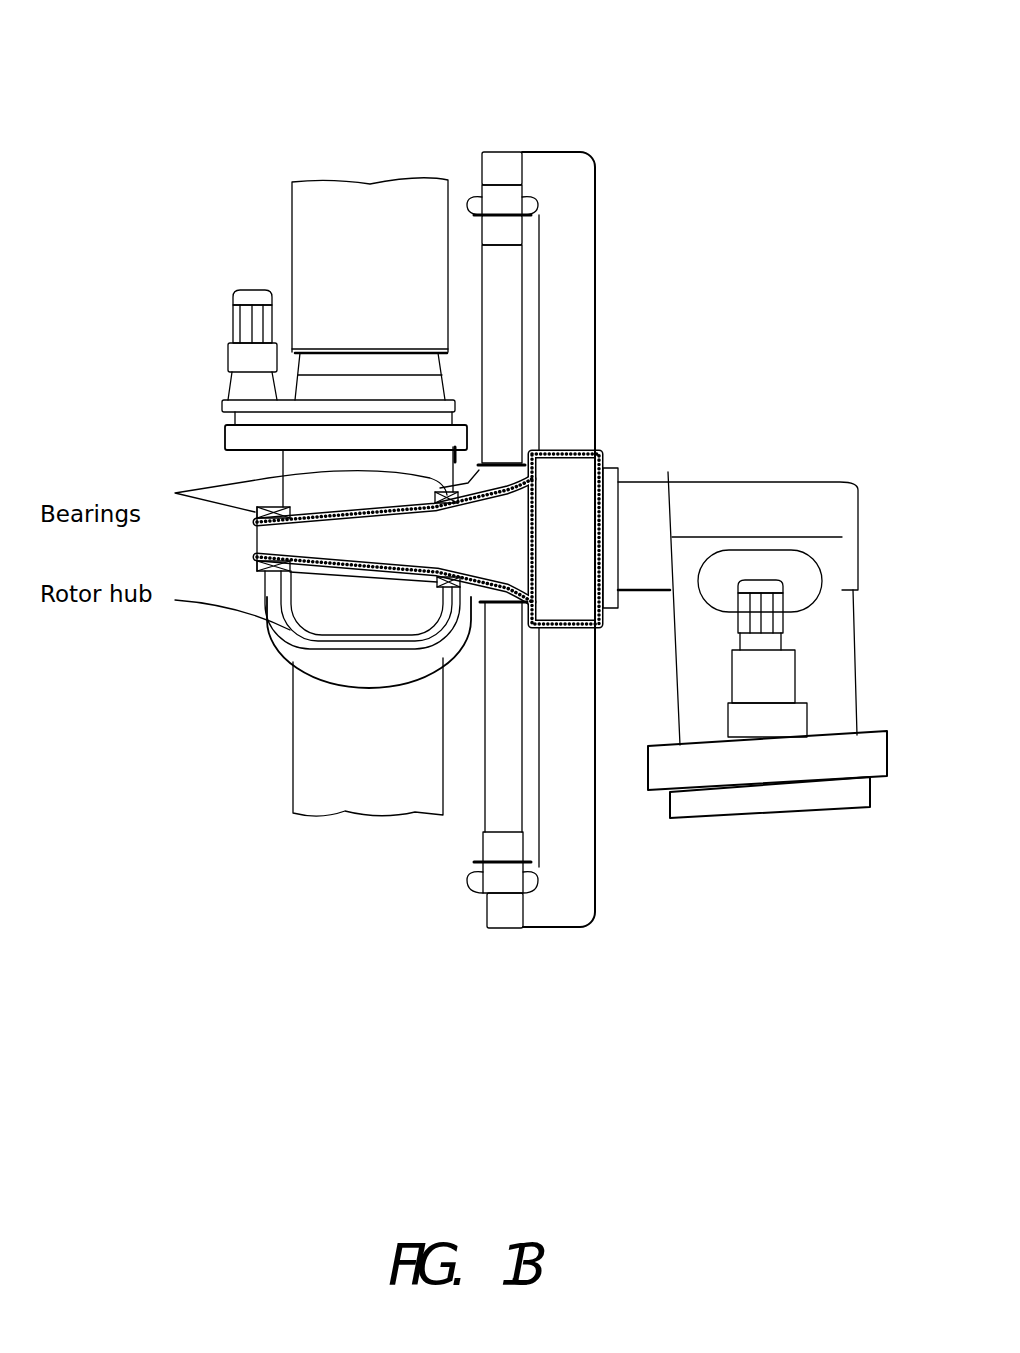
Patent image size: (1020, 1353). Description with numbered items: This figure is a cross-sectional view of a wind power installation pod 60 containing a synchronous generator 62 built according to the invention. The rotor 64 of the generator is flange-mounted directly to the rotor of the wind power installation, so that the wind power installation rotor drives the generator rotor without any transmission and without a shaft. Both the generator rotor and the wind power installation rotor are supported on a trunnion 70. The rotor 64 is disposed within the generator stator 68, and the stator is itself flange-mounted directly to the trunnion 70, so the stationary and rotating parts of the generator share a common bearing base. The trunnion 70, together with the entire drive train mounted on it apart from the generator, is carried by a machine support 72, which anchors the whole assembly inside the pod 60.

The wind power installation pod 60 is at (393, 112).
The synchronous generator 62 is at (728, 205).
The rotor 64 is at (512, 335).
The generator stator 68 is at (500, 165).
The trunnion 70 is at (273, 538).
The machine support 72 is at (742, 507).